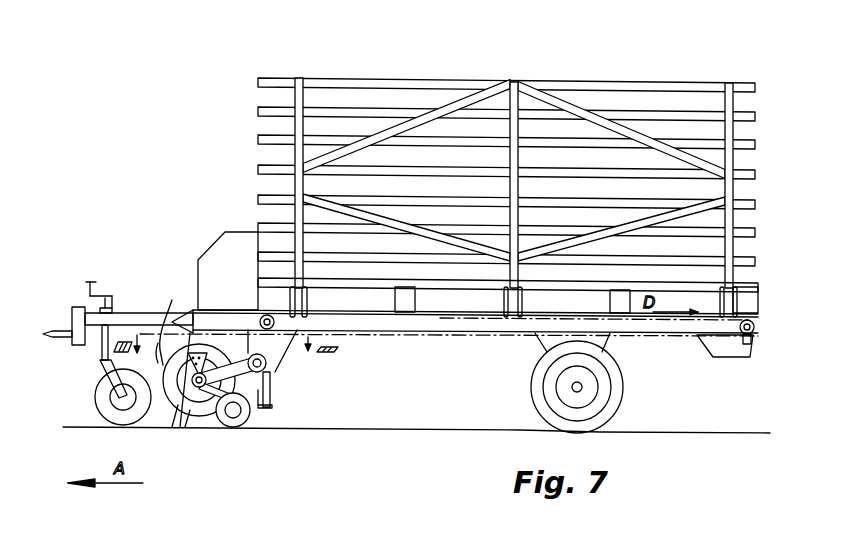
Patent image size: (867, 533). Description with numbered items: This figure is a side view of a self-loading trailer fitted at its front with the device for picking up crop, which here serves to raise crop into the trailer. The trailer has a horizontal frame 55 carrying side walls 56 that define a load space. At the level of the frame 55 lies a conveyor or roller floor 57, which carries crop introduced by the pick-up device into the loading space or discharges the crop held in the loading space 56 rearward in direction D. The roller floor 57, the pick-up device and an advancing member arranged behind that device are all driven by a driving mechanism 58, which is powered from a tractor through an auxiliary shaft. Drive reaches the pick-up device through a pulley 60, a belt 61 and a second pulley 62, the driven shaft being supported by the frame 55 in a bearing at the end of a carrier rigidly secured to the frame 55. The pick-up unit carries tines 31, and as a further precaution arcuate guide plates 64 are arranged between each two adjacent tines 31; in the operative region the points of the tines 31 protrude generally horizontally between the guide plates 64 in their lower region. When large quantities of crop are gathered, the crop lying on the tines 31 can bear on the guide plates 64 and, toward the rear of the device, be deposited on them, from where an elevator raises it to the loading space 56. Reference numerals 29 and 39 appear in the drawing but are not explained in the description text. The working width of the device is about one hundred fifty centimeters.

The pickup unit 29 is at (194, 427).
The tines 31 is at (155, 345).
The pivot arm 39 is at (208, 347).
The frame 55 is at (463, 325).
The side walls 56 is at (415, 64).
The conveyor or roller floor 57 is at (487, 330).
The driving mechanism 58 is at (222, 250).
The pulley 60 is at (281, 374).
The belt 61 is at (272, 408).
The pulley 62 is at (208, 430).
The arcuate guide plates 64 is at (166, 426).